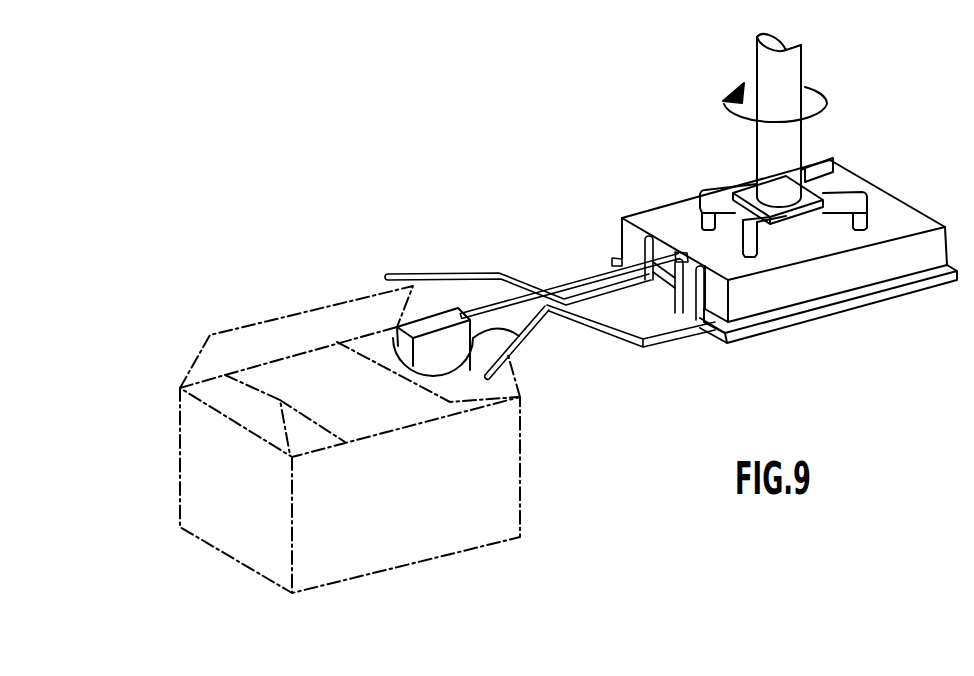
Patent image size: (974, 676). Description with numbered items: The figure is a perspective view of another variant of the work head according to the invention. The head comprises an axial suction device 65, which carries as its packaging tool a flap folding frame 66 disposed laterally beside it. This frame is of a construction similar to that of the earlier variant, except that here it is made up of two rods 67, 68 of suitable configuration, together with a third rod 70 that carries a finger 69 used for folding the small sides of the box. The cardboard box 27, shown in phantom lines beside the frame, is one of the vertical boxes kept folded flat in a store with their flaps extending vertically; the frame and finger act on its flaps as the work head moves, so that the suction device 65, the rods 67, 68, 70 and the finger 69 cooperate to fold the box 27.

The cardboard box 27 is at (512, 478).
The axial suction device 65 is at (946, 233).
The flap folding frame 66 is at (538, 260).
The rod 67 is at (467, 273).
The rod 68 is at (652, 348).
The finger 69 is at (528, 340).
The third rod 70 is at (587, 268).